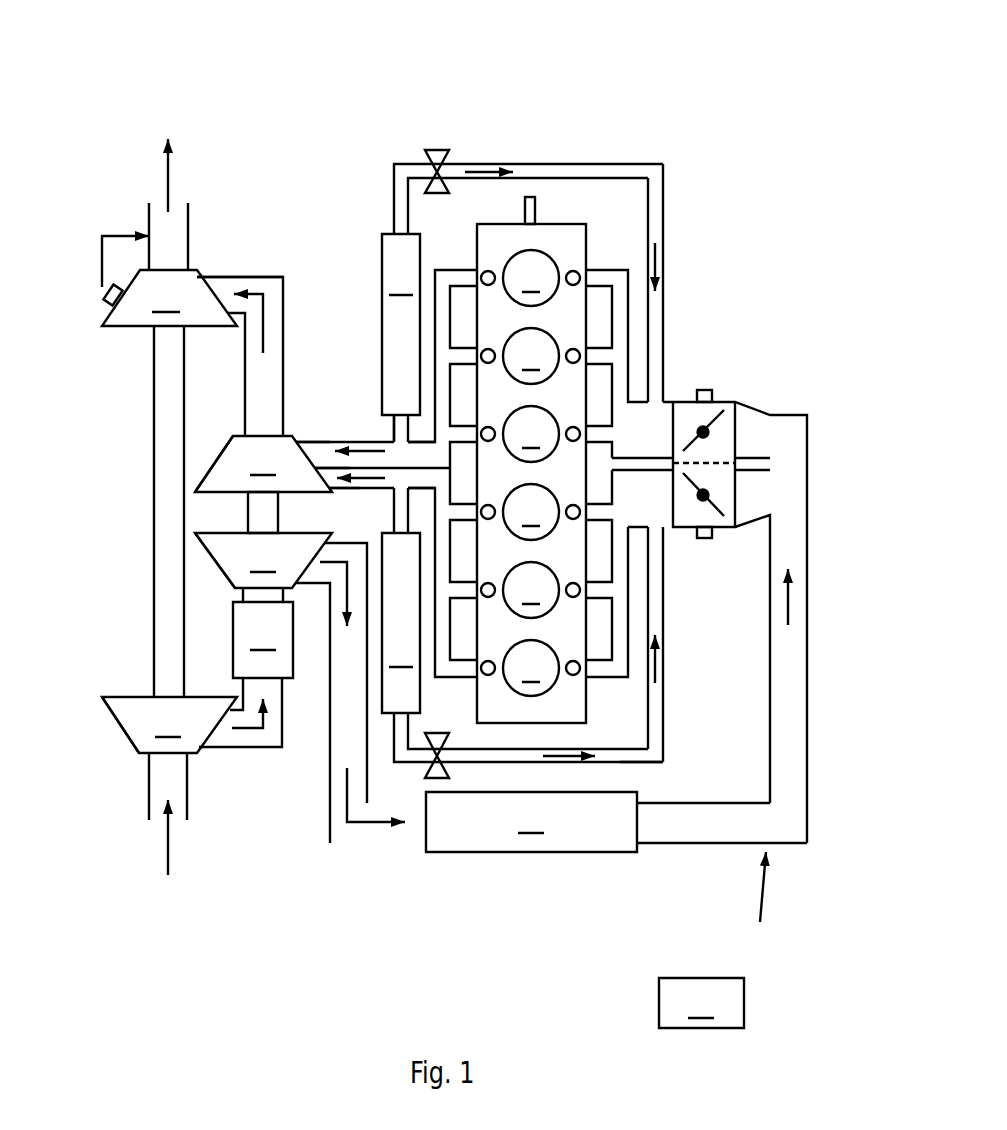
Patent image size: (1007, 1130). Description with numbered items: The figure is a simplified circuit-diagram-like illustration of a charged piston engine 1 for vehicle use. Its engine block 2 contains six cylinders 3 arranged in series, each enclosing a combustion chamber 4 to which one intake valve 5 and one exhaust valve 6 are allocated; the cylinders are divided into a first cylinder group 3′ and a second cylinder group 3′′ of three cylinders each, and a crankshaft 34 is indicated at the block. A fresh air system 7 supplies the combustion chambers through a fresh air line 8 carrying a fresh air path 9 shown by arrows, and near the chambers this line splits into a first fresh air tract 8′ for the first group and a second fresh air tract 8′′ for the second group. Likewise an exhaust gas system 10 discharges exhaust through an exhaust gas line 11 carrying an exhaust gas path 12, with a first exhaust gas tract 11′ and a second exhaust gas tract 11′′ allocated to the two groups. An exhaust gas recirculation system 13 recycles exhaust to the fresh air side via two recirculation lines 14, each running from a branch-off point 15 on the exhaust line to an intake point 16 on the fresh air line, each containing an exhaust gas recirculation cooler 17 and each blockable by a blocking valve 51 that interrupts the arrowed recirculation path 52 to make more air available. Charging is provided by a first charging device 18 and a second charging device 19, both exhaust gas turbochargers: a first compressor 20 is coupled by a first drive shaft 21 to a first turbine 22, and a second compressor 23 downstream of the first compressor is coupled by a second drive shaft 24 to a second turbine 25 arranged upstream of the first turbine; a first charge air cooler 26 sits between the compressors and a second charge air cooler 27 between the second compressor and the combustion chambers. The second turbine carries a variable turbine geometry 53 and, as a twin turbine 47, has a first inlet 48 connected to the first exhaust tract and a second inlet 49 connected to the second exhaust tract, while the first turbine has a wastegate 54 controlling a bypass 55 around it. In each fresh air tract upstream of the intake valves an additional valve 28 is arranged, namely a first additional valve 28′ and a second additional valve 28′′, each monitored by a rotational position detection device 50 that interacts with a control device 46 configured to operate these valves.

The piston engine 1 is at (709, 128).
The engine block 2 is at (553, 221).
The cylinder 3 is at (553, 258).
The first cylinder group 3′ is at (432, 352).
The second cylinder group 3′′ is at (432, 582).
The combustion chamber 4 is at (531, 472).
The intake valve 5 is at (580, 430).
The exhaust valve 6 is at (485, 428).
The fresh air system 7 is at (757, 901).
The fresh air line 8 is at (722, 845).
The first fresh air tract 8′ is at (749, 426).
The second fresh air tract 8′′ is at (750, 523).
The fresh air path 9 is at (347, 592).
The exhaust gas system 10 is at (242, 274).
The exhaust gas line 11 is at (284, 297).
The first exhaust gas tract 11′ is at (330, 446).
The second exhaust gas tract 11′′ is at (368, 490).
The exhaust gas path 12 is at (173, 165).
The exhaust gas recirculation system 13 is at (649, 772).
The recirculation line 14 is at (618, 162).
The branch-off point 15 is at (397, 443).
The intake point 16 is at (656, 401).
The exhaust gas recirculation cooler 17 is at (401, 473).
The first charging device 18 is at (120, 729).
The second charging device 19 is at (219, 568).
The first compressor 20 is at (169, 758).
The first drive shaft 21 is at (154, 507).
The first turbine 22 is at (169, 264).
The second compressor 23 is at (263, 560).
The second drive shaft 24 is at (250, 518).
The second turbine 25 is at (263, 464).
The first charge air cooler 26 is at (263, 633).
The second charge air cooler 27 is at (531, 822).
The additional valve 28 is at (716, 406).
The first additional valve 28′ is at (744, 376).
The second additional valve 28′′ is at (717, 563).
The crankshaft 34 is at (528, 196).
The control device 46 is at (701, 1003).
The twin turbine 47 is at (222, 448).
The first inlet 48 is at (299, 440).
The second inlet 49 is at (340, 490).
The rotational position detection device 50 is at (705, 389).
The blocking valve 51 is at (440, 148).
The recirculation path 52 is at (482, 166).
The variable turbine geometry 53 is at (313, 480).
The wastegate 54 is at (107, 296).
The bypass 55 is at (118, 233).